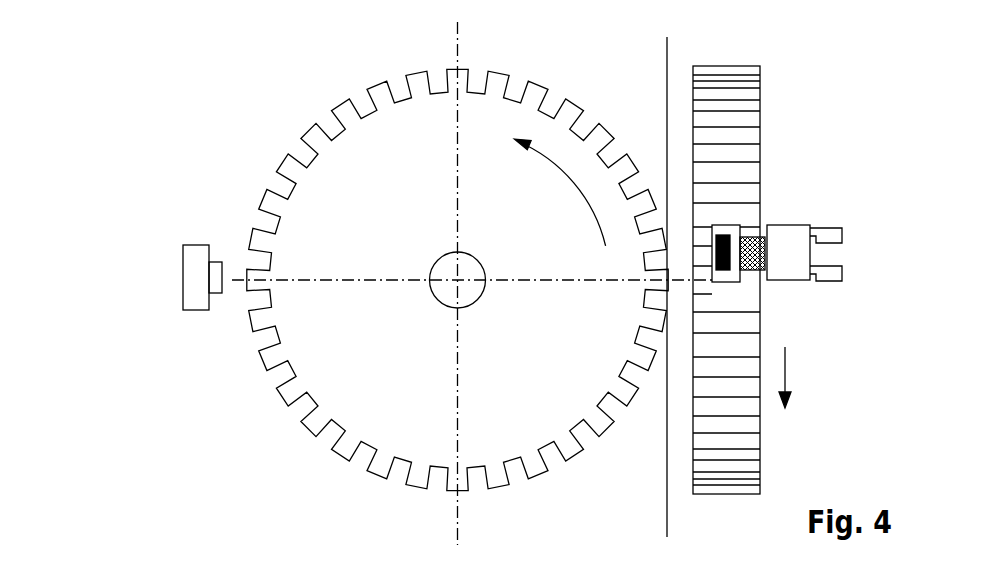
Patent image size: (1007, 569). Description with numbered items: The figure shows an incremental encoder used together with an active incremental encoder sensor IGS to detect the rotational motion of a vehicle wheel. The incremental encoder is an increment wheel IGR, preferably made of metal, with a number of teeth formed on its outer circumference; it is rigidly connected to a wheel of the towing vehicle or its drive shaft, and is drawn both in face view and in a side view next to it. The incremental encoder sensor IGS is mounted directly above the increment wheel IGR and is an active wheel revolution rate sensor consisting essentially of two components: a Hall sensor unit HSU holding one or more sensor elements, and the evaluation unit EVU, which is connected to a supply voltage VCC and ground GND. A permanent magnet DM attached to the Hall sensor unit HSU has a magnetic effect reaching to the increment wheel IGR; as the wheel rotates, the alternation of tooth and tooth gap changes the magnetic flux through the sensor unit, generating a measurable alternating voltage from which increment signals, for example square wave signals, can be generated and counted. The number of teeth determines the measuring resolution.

The increment wheel IGR is at (760, 108).
The incremental encoder sensor IGS is at (200, 247).
The permanent magnet DM is at (722, 232).
The evaluation unit EVU is at (778, 225).
The supply voltage VCC is at (846, 216).
The ground GND is at (851, 287).
The Hall sensor unit HSU is at (733, 275).